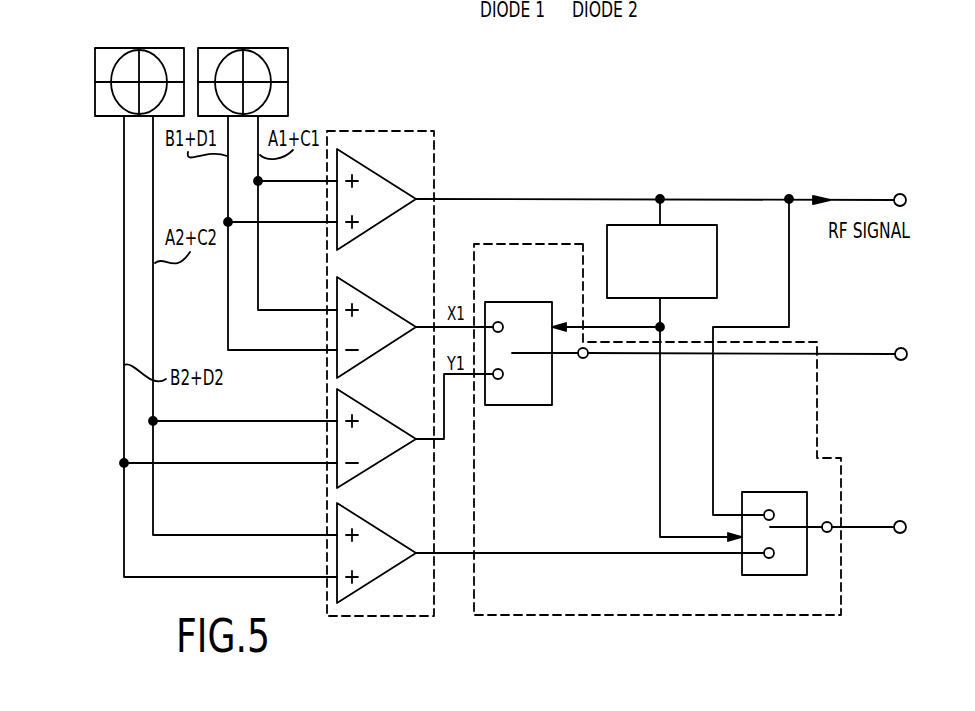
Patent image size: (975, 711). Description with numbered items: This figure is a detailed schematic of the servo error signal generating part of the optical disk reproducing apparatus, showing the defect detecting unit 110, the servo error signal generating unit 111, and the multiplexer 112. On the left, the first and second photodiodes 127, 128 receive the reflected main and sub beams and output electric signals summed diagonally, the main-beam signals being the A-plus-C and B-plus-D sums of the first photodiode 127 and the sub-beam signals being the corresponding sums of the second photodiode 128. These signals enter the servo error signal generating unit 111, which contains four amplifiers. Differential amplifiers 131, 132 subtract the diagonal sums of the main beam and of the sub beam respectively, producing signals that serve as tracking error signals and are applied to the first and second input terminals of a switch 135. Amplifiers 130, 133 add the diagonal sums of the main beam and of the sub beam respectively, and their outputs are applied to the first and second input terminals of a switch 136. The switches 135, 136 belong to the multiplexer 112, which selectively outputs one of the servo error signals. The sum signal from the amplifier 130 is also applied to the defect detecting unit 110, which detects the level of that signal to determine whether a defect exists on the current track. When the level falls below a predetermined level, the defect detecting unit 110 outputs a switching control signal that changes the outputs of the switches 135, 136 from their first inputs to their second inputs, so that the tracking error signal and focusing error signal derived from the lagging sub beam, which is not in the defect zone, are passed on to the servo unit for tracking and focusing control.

The first photodiode 127 is at (288, 62).
The second photodiode 128 is at (108, 46).
The servo error signal generating unit 111 is at (357, 130).
The amplifier 130 is at (393, 184).
The differential amplifier 131 is at (383, 296).
The differential amplifier 132 is at (398, 393).
The amplifier 133 is at (380, 526).
The multiplexer 112 is at (512, 244).
The switch 135 is at (524, 302).
The switch 136 is at (776, 492).
The defect detecting unit 110 is at (717, 260).